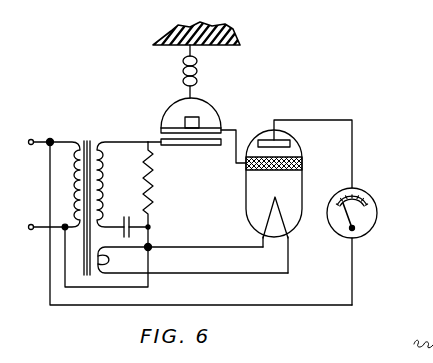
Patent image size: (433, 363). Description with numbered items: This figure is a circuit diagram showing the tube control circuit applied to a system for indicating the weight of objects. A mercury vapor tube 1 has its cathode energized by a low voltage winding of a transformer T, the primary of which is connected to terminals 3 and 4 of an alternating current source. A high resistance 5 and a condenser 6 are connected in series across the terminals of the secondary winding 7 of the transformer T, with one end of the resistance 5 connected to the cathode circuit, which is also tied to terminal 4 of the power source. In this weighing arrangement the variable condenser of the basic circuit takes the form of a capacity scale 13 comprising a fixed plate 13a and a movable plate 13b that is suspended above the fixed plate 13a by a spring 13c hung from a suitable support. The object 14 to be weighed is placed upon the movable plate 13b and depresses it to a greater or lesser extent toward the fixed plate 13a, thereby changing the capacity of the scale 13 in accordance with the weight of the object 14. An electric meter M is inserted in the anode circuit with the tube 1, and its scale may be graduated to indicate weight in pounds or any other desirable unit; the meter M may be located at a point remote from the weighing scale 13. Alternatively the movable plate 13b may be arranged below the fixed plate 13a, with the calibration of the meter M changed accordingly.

The mercury vapor tube 1 is at (303, 171).
The terminal 3 is at (31, 143).
The terminal 4 is at (37, 228).
The high resistance 5 is at (156, 187).
The condenser 6 is at (127, 214).
The secondary winding 7 is at (107, 177).
The capacity scale 13 is at (179, 113).
The fixed plate 13a is at (196, 147).
The movable plate 13b is at (218, 128).
The spring 13c is at (199, 72).
The object 14 is at (197, 115).
The transformer T is at (70, 198).
The electric meter M is at (378, 216).